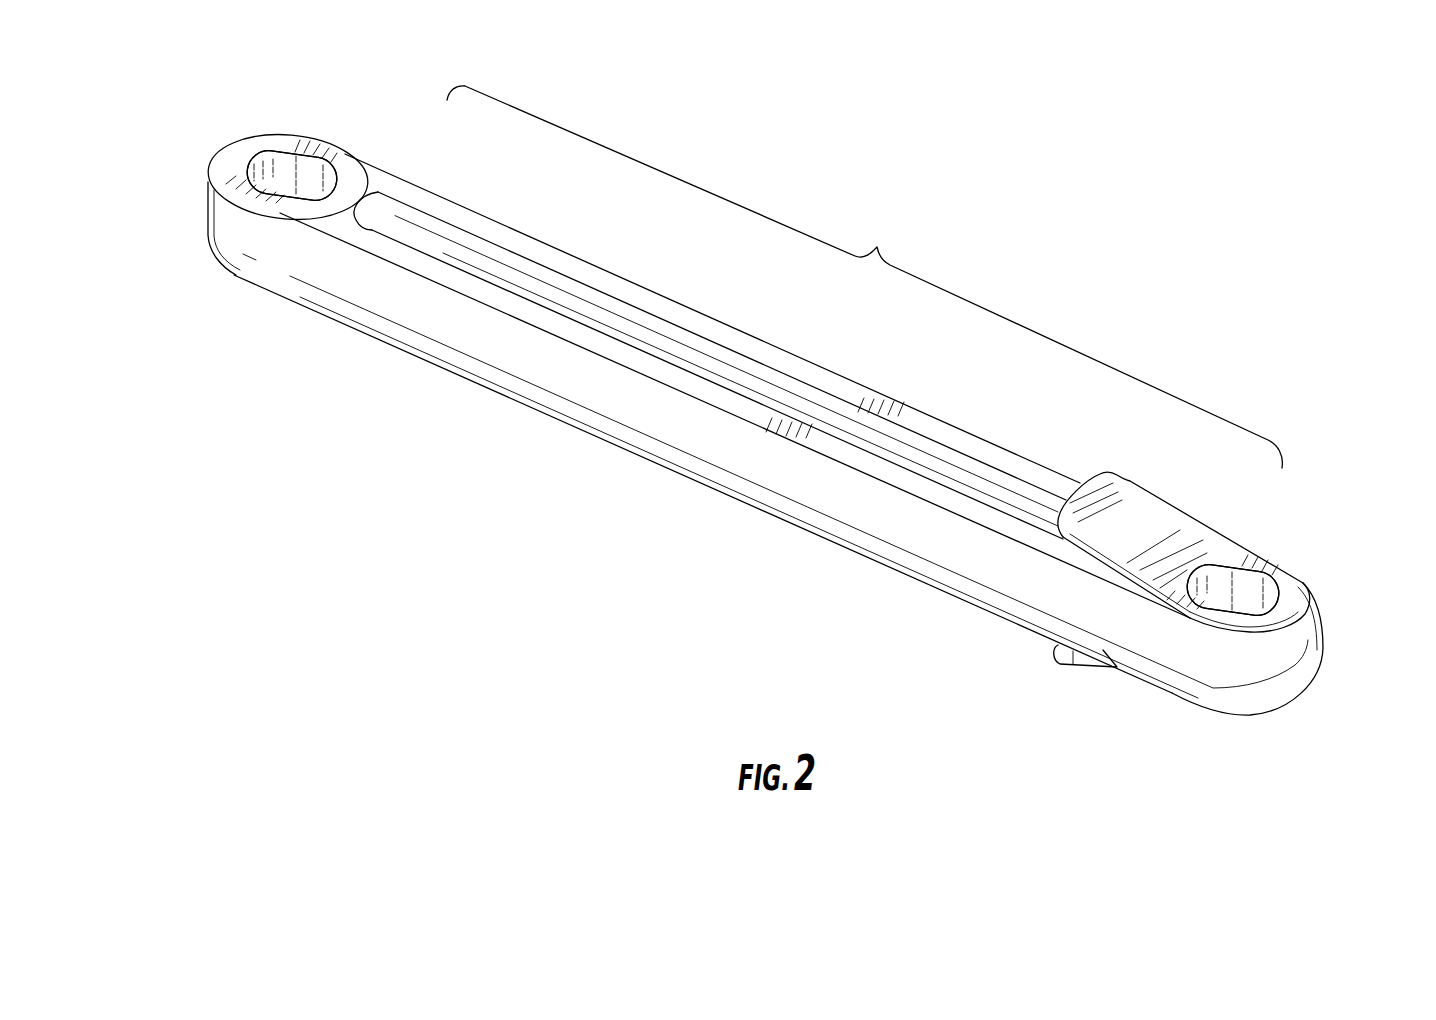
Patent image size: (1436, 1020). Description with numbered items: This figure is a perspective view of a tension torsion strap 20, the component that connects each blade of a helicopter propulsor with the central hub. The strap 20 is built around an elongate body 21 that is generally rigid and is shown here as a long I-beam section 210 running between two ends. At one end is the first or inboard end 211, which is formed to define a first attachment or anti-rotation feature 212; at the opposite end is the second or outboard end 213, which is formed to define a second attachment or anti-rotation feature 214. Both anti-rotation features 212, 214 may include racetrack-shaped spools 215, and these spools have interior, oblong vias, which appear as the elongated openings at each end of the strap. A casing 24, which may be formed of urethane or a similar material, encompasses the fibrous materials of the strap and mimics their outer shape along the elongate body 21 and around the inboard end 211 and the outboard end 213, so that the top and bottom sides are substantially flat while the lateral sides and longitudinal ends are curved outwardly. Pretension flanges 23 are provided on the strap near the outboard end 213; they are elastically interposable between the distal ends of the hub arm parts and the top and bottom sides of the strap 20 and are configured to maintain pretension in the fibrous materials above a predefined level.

The tension torsion strap 20 is at (365, 318).
The elongate body 21 is at (734, 385).
The pretension flanges 23 is at (1131, 510).
The casing 24 is at (1293, 648).
The I-beam section 210 is at (864, 277).
The inboard end 211 is at (261, 227).
The first anti-rotation feature 212 is at (237, 162).
The outboard end 213 is at (1257, 649).
The second anti-rotation feature 214 is at (1292, 584).
The racetrack-shaped spools 215 is at (762, 383).